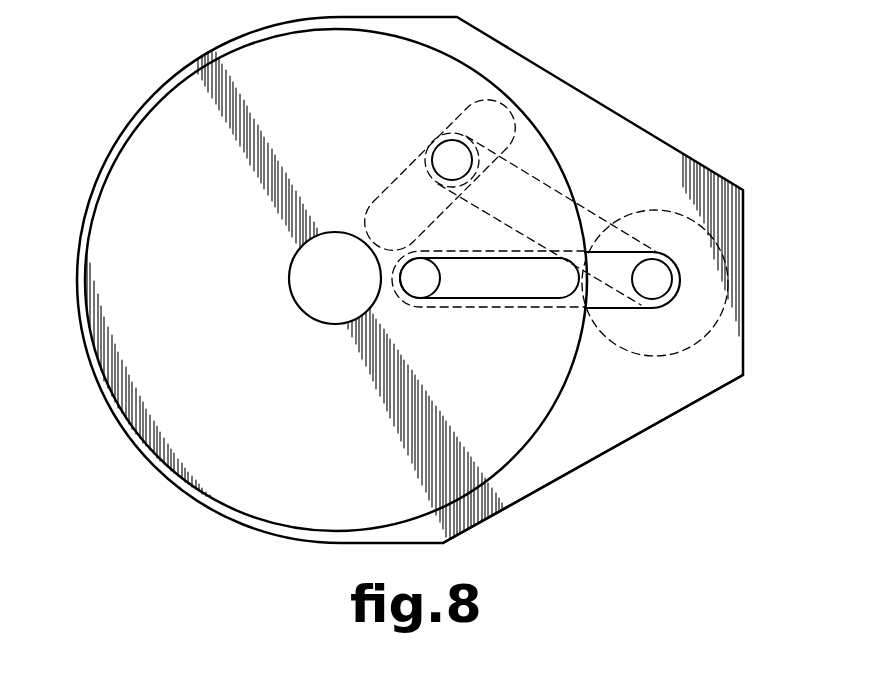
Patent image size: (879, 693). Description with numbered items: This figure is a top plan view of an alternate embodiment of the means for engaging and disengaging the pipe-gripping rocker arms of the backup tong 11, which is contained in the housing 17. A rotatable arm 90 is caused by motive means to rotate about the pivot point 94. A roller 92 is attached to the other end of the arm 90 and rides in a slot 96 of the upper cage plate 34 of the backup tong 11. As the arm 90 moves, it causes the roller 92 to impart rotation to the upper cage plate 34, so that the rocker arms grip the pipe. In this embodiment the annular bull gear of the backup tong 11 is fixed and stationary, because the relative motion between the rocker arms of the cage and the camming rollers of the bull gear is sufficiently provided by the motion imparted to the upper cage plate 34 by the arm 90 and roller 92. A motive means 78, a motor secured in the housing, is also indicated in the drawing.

The backup tong 11 is at (563, 73).
The housing 17 is at (610, 450).
The upper cage plate 34 is at (520, 400).
The motive means 78 is at (675, 243).
The rotatable arm 90 is at (488, 287).
The roller 92 is at (413, 285).
The pivot point 94 is at (652, 288).
The slot 96 is at (582, 294).